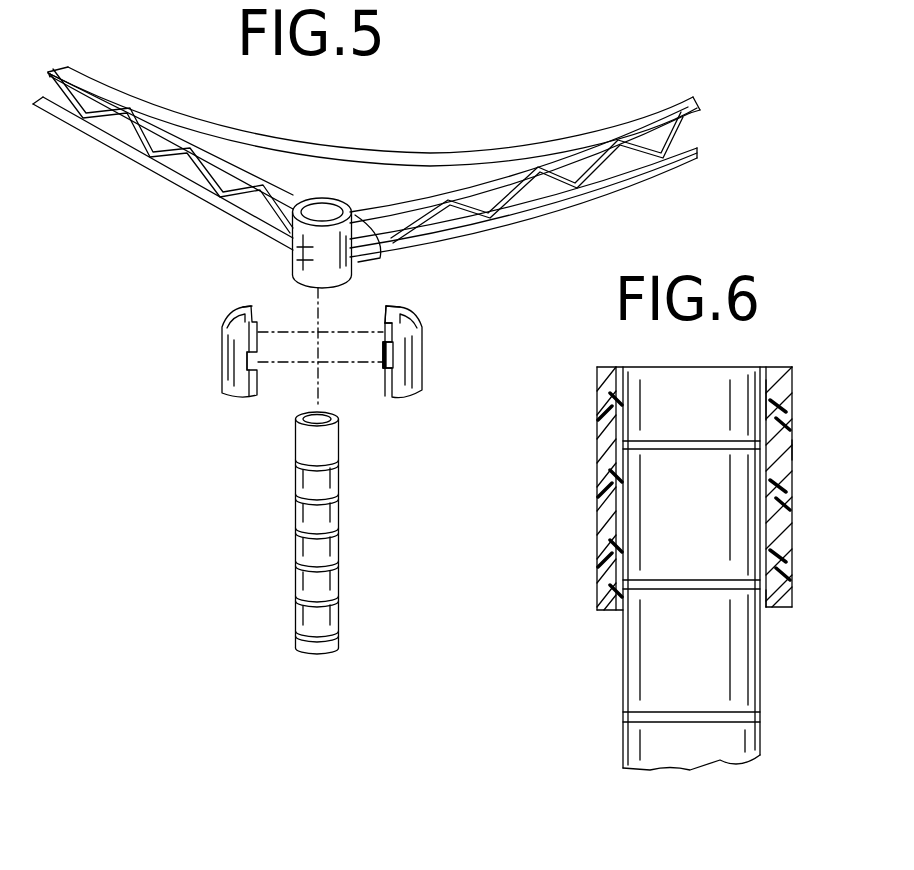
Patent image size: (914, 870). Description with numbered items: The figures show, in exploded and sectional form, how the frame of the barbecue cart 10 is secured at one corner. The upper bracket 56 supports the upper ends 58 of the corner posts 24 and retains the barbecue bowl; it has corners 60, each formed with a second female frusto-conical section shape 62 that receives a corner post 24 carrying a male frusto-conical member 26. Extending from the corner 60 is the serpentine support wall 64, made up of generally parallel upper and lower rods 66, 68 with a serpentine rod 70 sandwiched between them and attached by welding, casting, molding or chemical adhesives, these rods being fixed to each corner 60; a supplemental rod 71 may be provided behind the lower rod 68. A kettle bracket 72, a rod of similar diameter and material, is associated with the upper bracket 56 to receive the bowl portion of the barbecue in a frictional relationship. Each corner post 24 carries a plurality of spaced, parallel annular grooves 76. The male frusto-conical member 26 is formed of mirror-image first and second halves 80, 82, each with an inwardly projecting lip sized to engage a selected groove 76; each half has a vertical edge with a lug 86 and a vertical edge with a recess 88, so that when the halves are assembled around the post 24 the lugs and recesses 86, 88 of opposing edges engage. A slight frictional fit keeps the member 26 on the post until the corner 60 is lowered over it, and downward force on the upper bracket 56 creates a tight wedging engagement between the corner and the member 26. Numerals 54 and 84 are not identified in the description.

In FIG. 5, the barbecue cart 10 is at (530, 86).
In FIG. 5, the corner post 24 is at (310, 578).
In FIG. 6, the corner post 24 is at (638, 680).
In FIG. 5, the male frusto-conical member 26 is at (408, 360).
In FIG. 6, the male frusto-conical member 26 is at (772, 598).
In FIG. 5, the weld connection 54 is at (360, 262).
In FIG. 5, the upper bracket 56 is at (92, 66).
In FIG. 5, the upper end 58 is at (318, 440).
In FIG. 6, the upper end 58 is at (770, 395).
In FIG. 5, the corner 60 is at (300, 262).
In FIG. 6, the corner 60 is at (598, 473).
In FIG. 5, the second female frusto-conical section shape 62 is at (297, 252).
In FIG. 6, the second female frusto-conical section shape 62 is at (790, 445).
In FIG. 5, the serpentine support wall 64 is at (699, 152).
In FIG. 5, the upper rod 66 is at (593, 150).
In FIG. 5, the lower rod 68 is at (621, 176).
In FIG. 5, the serpentine rod 70 is at (545, 180).
In FIG. 5, the supplemental rod 71 is at (699, 130).
In FIG. 5, the kettle bracket 72 is at (197, 130).
In FIG. 5, the annular groove 76 is at (318, 533).
In FIG. 6, the annular groove 76 is at (765, 717).
In FIG. 5, the first half 80 is at (418, 342).
In FIG. 6, the first half 80 is at (790, 518).
In FIG. 5, the second half 82 is at (237, 377).
In FIG. 6, the second half 82 is at (616, 538).
In FIG. 5, the tab 84 is at (420, 318).
In FIG. 6, the tab 84 is at (640, 440).
In FIG. 5, the lug 86 is at (254, 318).
In FIG. 5, the recess 88 is at (388, 326).